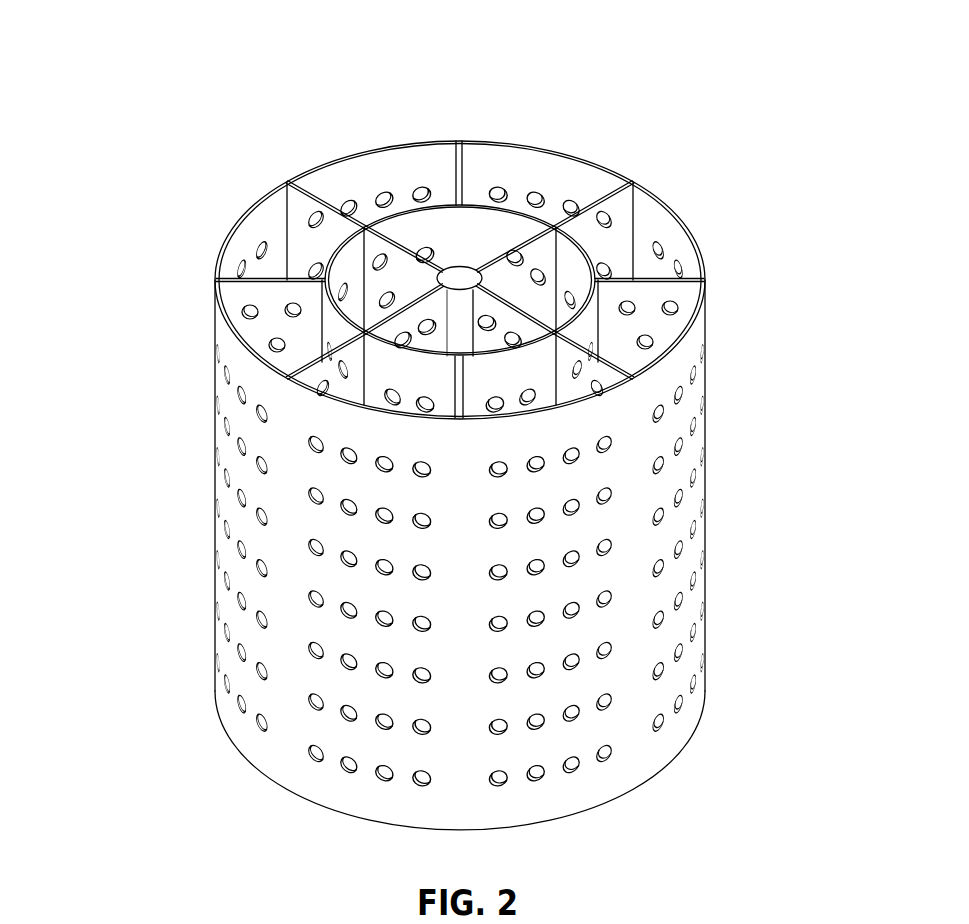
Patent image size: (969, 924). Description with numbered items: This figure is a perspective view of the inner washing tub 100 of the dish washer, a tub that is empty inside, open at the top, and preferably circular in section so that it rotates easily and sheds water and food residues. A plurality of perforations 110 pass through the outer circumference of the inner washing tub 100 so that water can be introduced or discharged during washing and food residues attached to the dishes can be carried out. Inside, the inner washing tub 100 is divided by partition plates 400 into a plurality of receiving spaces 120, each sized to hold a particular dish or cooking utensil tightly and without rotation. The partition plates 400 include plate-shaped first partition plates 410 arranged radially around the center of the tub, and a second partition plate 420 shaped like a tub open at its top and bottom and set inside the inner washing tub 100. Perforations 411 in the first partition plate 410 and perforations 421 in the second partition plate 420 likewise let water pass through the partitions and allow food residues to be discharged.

The inner washing tub 100 is at (387, 165).
The perforations 110 is at (540, 190).
The receiving space 120 is at (277, 341).
The partition plates 400 is at (857, 120).
The first partition plate 410 is at (620, 207).
The perforations 411 is at (380, 252).
The second partition plate 420 is at (590, 325).
The perforations 421 is at (338, 272).